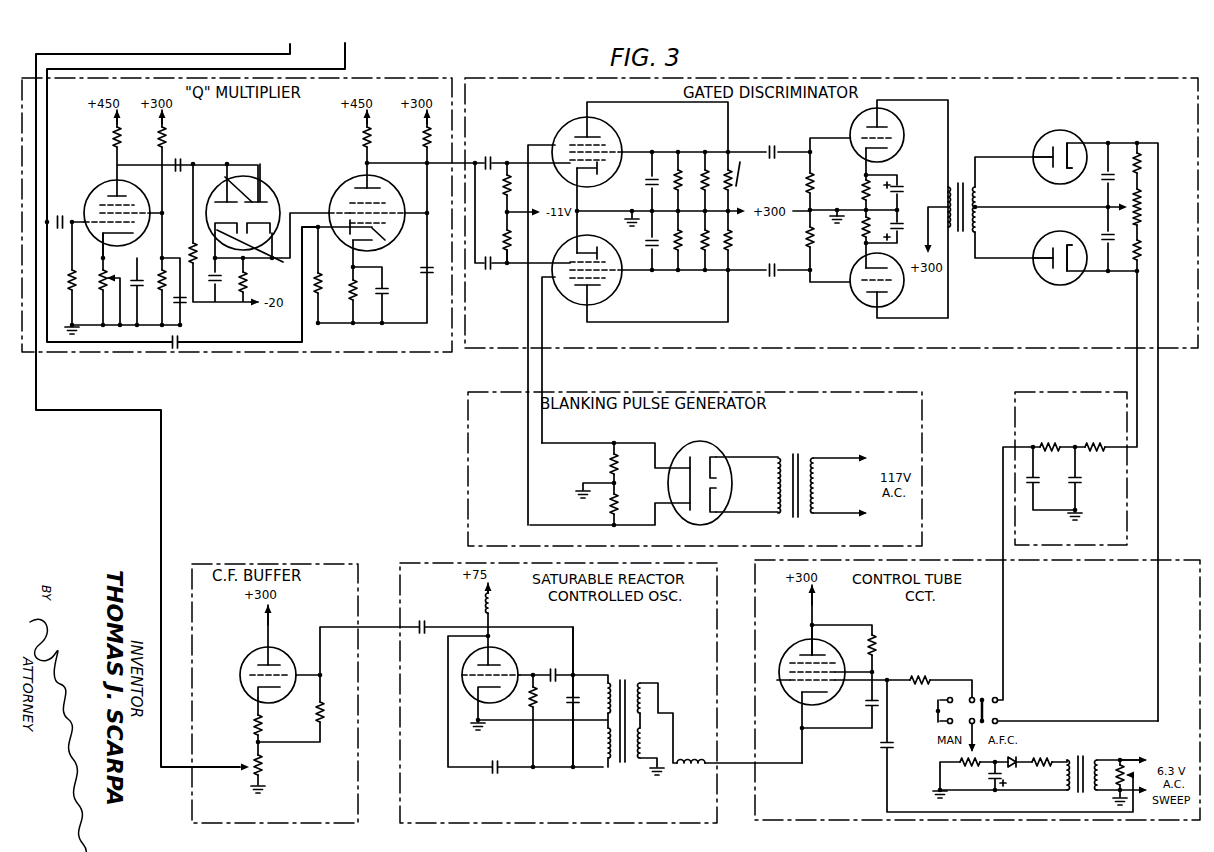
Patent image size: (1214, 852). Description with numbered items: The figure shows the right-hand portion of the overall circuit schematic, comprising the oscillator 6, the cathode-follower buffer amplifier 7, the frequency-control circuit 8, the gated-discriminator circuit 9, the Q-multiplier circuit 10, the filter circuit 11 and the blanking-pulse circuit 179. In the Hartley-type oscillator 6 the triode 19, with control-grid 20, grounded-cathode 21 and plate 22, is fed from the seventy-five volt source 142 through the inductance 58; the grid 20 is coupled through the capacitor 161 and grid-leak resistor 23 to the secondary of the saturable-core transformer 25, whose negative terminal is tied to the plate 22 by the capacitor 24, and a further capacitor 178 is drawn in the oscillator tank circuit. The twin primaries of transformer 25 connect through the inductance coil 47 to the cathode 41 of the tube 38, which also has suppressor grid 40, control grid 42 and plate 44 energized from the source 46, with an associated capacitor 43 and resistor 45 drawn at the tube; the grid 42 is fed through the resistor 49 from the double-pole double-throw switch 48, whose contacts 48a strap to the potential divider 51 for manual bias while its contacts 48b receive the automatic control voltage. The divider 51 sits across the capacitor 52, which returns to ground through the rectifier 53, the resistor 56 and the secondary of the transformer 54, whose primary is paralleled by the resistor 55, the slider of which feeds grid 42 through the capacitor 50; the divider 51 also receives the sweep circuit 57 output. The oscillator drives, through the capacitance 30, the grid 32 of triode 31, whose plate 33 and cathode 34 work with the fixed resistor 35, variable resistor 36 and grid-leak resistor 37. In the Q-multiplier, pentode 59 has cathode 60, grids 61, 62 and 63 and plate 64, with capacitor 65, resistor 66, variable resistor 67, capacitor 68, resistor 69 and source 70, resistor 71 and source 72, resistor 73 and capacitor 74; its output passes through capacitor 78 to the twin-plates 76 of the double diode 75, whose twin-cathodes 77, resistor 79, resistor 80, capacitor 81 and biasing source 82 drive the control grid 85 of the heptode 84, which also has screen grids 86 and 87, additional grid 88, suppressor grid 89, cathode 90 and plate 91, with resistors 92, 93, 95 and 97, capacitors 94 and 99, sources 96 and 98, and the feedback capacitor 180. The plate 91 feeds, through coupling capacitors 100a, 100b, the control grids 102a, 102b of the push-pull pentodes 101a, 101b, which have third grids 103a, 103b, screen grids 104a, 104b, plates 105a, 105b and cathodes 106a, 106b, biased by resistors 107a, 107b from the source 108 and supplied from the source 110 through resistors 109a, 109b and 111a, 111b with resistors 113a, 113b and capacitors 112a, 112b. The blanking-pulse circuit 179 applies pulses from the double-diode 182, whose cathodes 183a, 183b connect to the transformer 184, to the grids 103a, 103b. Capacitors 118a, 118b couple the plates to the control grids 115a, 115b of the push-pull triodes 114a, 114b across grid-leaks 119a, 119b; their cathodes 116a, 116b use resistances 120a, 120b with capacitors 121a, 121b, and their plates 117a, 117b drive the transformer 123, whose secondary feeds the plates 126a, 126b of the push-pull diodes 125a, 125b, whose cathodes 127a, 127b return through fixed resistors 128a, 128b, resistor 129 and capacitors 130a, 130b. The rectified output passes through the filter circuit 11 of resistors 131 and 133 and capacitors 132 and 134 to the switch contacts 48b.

The oscillator 6 is at (430, 565).
The cathode-follower buffer amplifier 7 is at (356, 566).
The frequency-control circuit 8 is at (1186, 563).
The gated-discriminator circuit 9 is at (1082, 78).
The Q-multiplier circuit 10 is at (395, 78).
The filter circuit 11 is at (1090, 392).
The triode 19 is at (510, 658).
The control-grid 20 is at (465, 674).
The grounded-cathode 21 is at (476, 698).
The plate 22 is at (492, 655).
The grid-leak resistor 23 is at (530, 702).
The capacitor 24 is at (497, 760).
The saturable-core transformer 25 is at (622, 678).
The capacitance 30 is at (425, 634).
The triode 31 is at (246, 650).
The control-grid 32 is at (246, 670).
The plate 33 is at (276, 660).
The cathode 34 is at (250, 690).
The fixed resistor 35 is at (250, 728).
The variable resistor 36 is at (272, 768).
The grid-leak resistor 37 is at (328, 712).
The tube 38 is at (777, 682).
The suppressor grid 40 is at (790, 665).
The cathode 41 is at (800, 698).
The control grid 42 is at (826, 685).
The capacitor 43 is at (830, 658).
The plate 44 is at (806, 648).
The screen resistor 45 is at (880, 645).
The 300 volt source 46 is at (266, 618).
The inductance coil 47 is at (690, 770).
The double-pole, double-throw switch 48 is at (982, 697).
The pair of contacts 48a is at (951, 703).
The pair of contacts 48b is at (1000, 722).
The resistor 49 is at (922, 676).
The capacitor 50 is at (896, 738).
The potential divider 51 is at (957, 760).
The capacitor 52 is at (989, 786).
The rectifier 53 is at (1015, 756).
The transformer 54 is at (1080, 754).
The resistor 55 is at (1114, 788).
The resistor 56 is at (1063, 782).
The sweep circuit 57 is at (1150, 756).
The inductance 58 is at (493, 600).
The pentode 59 is at (105, 184).
The cathode 60 is at (118, 240).
The control grid 61 is at (140, 218).
The suppressor grid 62 is at (137, 200).
The screen grid 63 is at (96, 210).
The plate 64 is at (122, 192).
The coupling capacitor 65 is at (62, 230).
The grid-leak resistor 66 is at (68, 287).
The variable resistor 67 is at (100, 270).
The capacitor 68 is at (140, 292).
The resistor 69 is at (112, 140).
The 450 volt potential source 70 is at (113, 122).
The resistor 71 is at (172, 142).
The 300 volt potential source 72 is at (166, 130).
The resistor 73 is at (164, 268).
The capacitor 74 is at (184, 304).
The double diode 75 is at (265, 205).
The twin-plates 76 is at (230, 194).
The twin-cathodes 77 is at (273, 250).
The capacitor 78 is at (183, 160).
The resistor 79 is at (196, 260).
The cathode-resistor 80 is at (248, 282).
The capacitor 81 is at (217, 300).
The biasing source 82 is at (252, 304).
The heptode 84 is at (352, 190).
The control grid 85 is at (346, 215).
The screen grid 86 is at (345, 205).
The screen grid 87 is at (348, 234).
The additional grid 88 is at (386, 240).
The suppressor grid 89 is at (392, 204).
The cathode 90 is at (366, 244).
The plate 91 is at (381, 190).
The resistor 92 is at (320, 291).
The cathode resistor 93 is at (355, 296).
The capacitor 94 is at (384, 297).
The resistor 95 is at (360, 140).
The 450 volt source 96 is at (369, 120).
The resistor 97 is at (420, 140).
The 300 volt source 98 is at (428, 118).
The capacitor 99 is at (421, 274).
The coupling capacitor 100a is at (485, 150).
The coupling capacitor 100b is at (485, 275).
The push-pull pentode 101a is at (618, 138).
The push-pull pentode 101b is at (562, 298).
The control grid 102a is at (560, 164).
The control grid 102b is at (520, 268).
The third grid 103a is at (620, 150).
The third grid 103b is at (608, 280).
The screen grid 104a is at (562, 140).
The screen grid 104b is at (608, 272).
The plate 105a is at (590, 125).
The plate 105b is at (590, 308).
The cathode 106a is at (580, 182).
The cathode 106b is at (580, 255).
The resistor 107a is at (503, 188).
The resistor 107b is at (503, 240).
The 11 volt source 108 is at (507, 265).
The resistor 109a is at (726, 166).
The resistor 109b is at (730, 262).
The 300 volt source 110 is at (957, 270).
The resistor 111a is at (682, 165).
The resistor 111b is at (680, 258).
The capacitor 112a is at (645, 182).
The capacitor 112b is at (645, 244).
The resistor 113a is at (703, 165).
The resistor 113b is at (703, 258).
The push-pull triode 114a is at (897, 122).
The push-pull triode 114b is at (868, 305).
The control grid 115a is at (892, 140).
The control grid 115b is at (895, 285).
The cathode 116a is at (860, 150).
The cathode 116b is at (862, 268).
The plate 117a is at (870, 126).
The plate 117b is at (870, 294).
The capacitor 118a is at (774, 143).
The capacitor 118b is at (775, 278).
The grid-leak 119a is at (805, 183).
The grid-leak 119b is at (805, 237).
The resistance 120a is at (860, 193).
The resistance 120b is at (860, 230).
The capacitor 121a is at (902, 190).
The capacitor 121b is at (899, 232).
The transformer 123 is at (960, 150).
The push-pull diode 125a is at (1055, 133).
The push-pull diode 125b is at (1050, 290).
The plate 126a is at (1040, 150).
The plate 126b is at (1040, 266).
The cathode 127a is at (1073, 143).
The cathode 127b is at (1074, 276).
The fixed resistor 128a is at (1142, 163).
The fixed resistor 128b is at (1142, 250).
The resistor 129 is at (1142, 205).
The capacitor 130a is at (1100, 178).
The capacitor 130b is at (1100, 236).
The resistor 131 is at (1096, 445).
The capacitor 132 is at (1084, 484).
The resistor 133 is at (1050, 445).
The capacitor 134 is at (1041, 484).
The 75 volt source 142 is at (482, 586).
The capacitor 161 is at (562, 666).
The capacitor 178 is at (566, 710).
The blanking-pulse circuit 179 is at (922, 422).
The capacitor 180 is at (172, 350).
The double-diode 182 is at (690, 448).
The cathode 183a is at (718, 510).
The cathode 183b is at (720, 460).
The transformer 184 is at (792, 455).